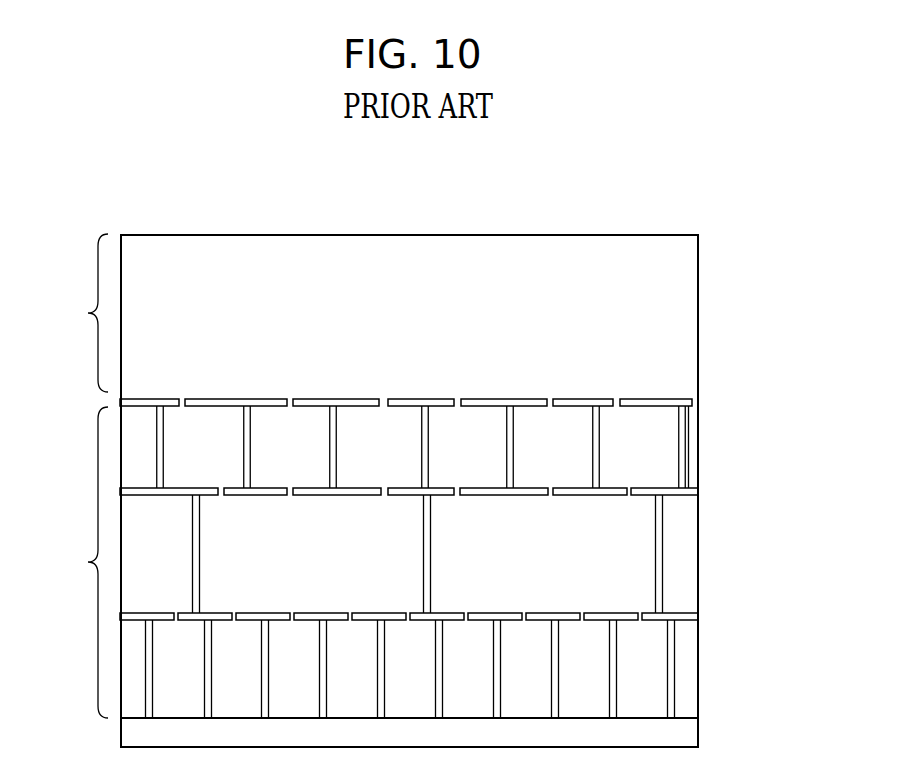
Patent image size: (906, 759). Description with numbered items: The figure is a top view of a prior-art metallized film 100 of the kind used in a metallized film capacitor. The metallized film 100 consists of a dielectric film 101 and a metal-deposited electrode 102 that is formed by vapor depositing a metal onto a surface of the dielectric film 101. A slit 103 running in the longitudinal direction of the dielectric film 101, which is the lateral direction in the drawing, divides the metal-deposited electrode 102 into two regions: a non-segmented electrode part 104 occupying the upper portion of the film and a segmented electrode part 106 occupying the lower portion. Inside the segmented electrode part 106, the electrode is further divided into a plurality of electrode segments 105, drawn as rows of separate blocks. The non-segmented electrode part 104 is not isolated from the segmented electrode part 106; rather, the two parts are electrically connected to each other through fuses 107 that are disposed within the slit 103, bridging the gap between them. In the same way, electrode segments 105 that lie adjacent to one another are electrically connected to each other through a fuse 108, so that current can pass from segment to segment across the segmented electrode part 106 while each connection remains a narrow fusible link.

The metallized film 100 is at (691, 213).
The dielectric film 101 is at (474, 256).
The metal-deposited electrode 102 is at (672, 351).
The slit 103 is at (143, 398).
The non-segmented electrode part 104 is at (80, 313).
The electrode segment 105 is at (649, 448).
The segmented electrode part 106 is at (80, 562).
The fuse 107 is at (290, 398).
The fuse 108 is at (643, 617).